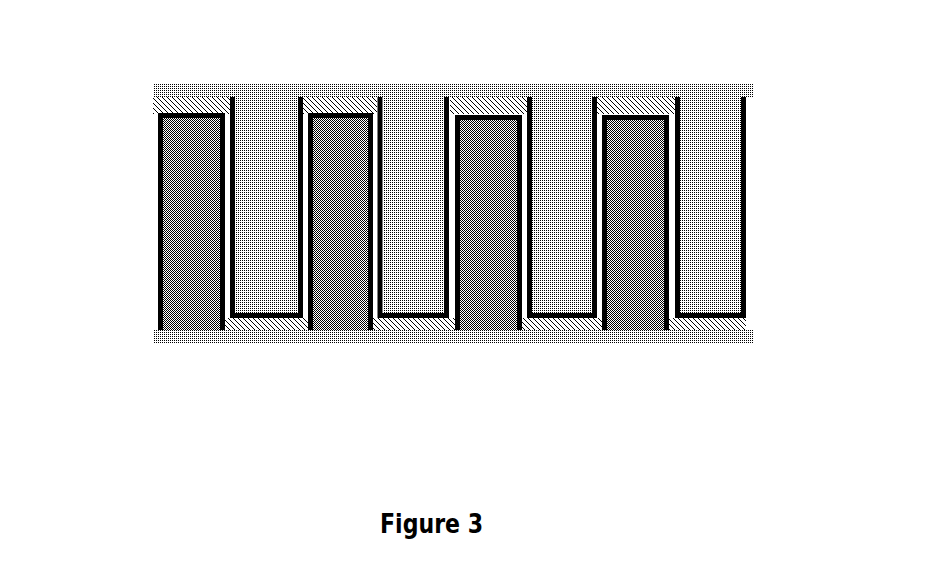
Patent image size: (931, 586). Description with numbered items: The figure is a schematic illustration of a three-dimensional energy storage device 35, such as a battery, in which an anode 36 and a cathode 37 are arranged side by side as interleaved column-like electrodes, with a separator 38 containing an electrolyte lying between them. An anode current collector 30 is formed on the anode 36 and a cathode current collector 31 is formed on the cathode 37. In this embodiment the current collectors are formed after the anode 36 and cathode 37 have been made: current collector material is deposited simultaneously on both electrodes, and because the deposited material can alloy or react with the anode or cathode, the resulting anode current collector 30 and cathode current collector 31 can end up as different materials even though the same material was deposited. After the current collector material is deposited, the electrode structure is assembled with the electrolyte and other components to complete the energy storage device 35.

The anode current collector 30 is at (747, 128).
The cathode current collector 31 is at (157, 227).
The three-dimensional energy storage device 35 is at (428, 382).
The anode 36 is at (703, 252).
The cathode 37 is at (190, 162).
The separator 38 is at (632, 108).